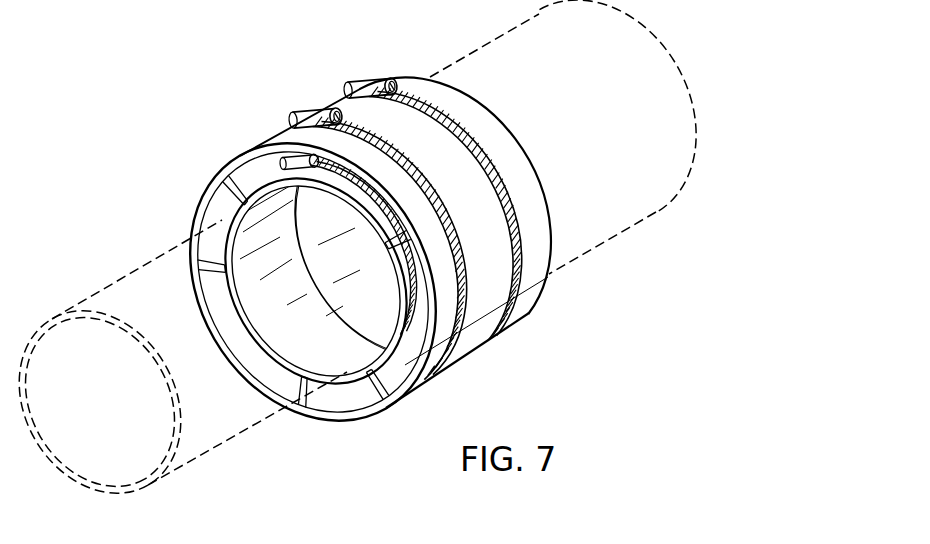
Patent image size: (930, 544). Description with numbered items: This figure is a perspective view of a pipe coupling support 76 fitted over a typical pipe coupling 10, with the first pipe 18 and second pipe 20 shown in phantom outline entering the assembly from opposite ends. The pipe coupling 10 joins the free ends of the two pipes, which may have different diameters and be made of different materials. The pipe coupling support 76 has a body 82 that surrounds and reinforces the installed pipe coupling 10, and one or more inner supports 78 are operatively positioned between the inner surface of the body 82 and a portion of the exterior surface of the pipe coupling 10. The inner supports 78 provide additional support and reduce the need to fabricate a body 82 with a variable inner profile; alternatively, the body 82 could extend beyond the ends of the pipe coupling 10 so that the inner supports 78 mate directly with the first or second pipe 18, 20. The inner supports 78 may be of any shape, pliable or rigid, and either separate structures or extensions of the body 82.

The pipe coupling 10 is at (350, 384).
The first pipe 18 is at (522, 68).
The second pipe 20 is at (186, 453).
The pipe coupling support 76 is at (218, 90).
The inner support 78 is at (293, 388).
The body 82 is at (490, 322).